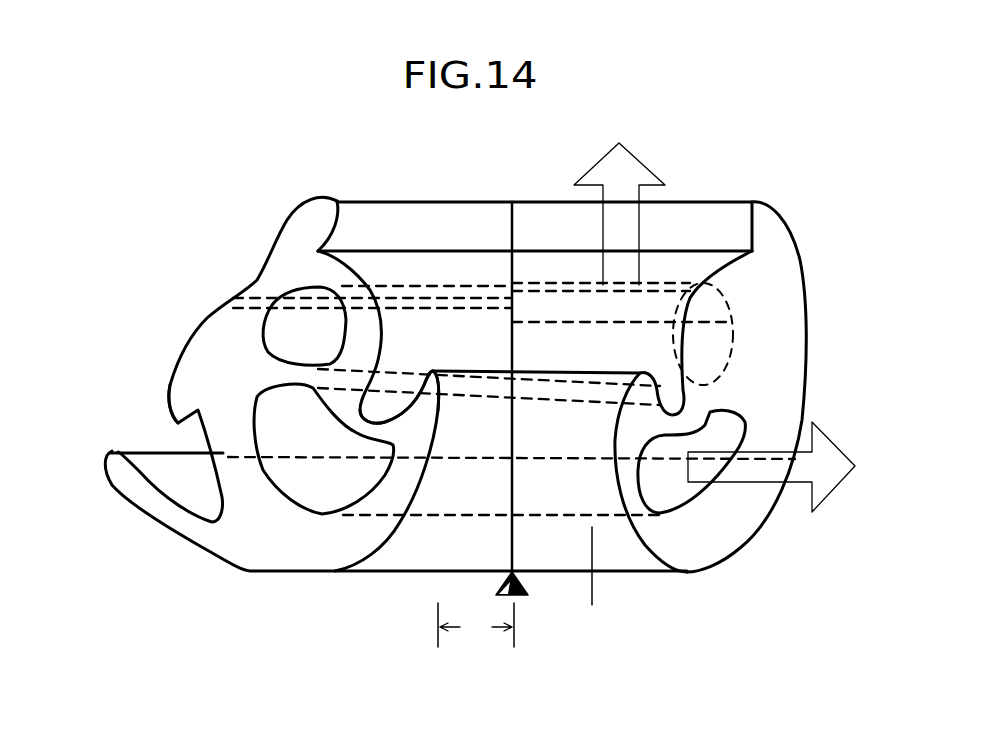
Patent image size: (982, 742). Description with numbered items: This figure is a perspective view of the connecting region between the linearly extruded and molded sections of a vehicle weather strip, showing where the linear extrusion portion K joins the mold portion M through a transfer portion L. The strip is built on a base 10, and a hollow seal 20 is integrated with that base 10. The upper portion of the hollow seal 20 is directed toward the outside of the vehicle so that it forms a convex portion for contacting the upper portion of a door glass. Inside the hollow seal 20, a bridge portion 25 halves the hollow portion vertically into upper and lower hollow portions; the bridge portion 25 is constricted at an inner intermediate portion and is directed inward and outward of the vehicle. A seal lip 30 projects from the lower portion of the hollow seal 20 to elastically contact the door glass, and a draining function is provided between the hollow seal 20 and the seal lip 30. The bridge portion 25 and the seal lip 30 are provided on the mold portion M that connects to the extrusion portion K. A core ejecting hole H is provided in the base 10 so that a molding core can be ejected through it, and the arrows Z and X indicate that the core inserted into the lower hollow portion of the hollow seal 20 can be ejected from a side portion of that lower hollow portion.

The base 10 is at (280, 273).
The hollow seal 20 is at (323, 475).
The bridge portion 25 is at (315, 372).
The seal lip 30 is at (416, 420).
The core ejecting hole H is at (675, 290).
The linear extrusion portion K is at (205, 297).
The arrow Z is at (619, 201).
The arrow X is at (781, 467).
The mold portion M is at (598, 581).
The transfer portion L is at (476, 625).